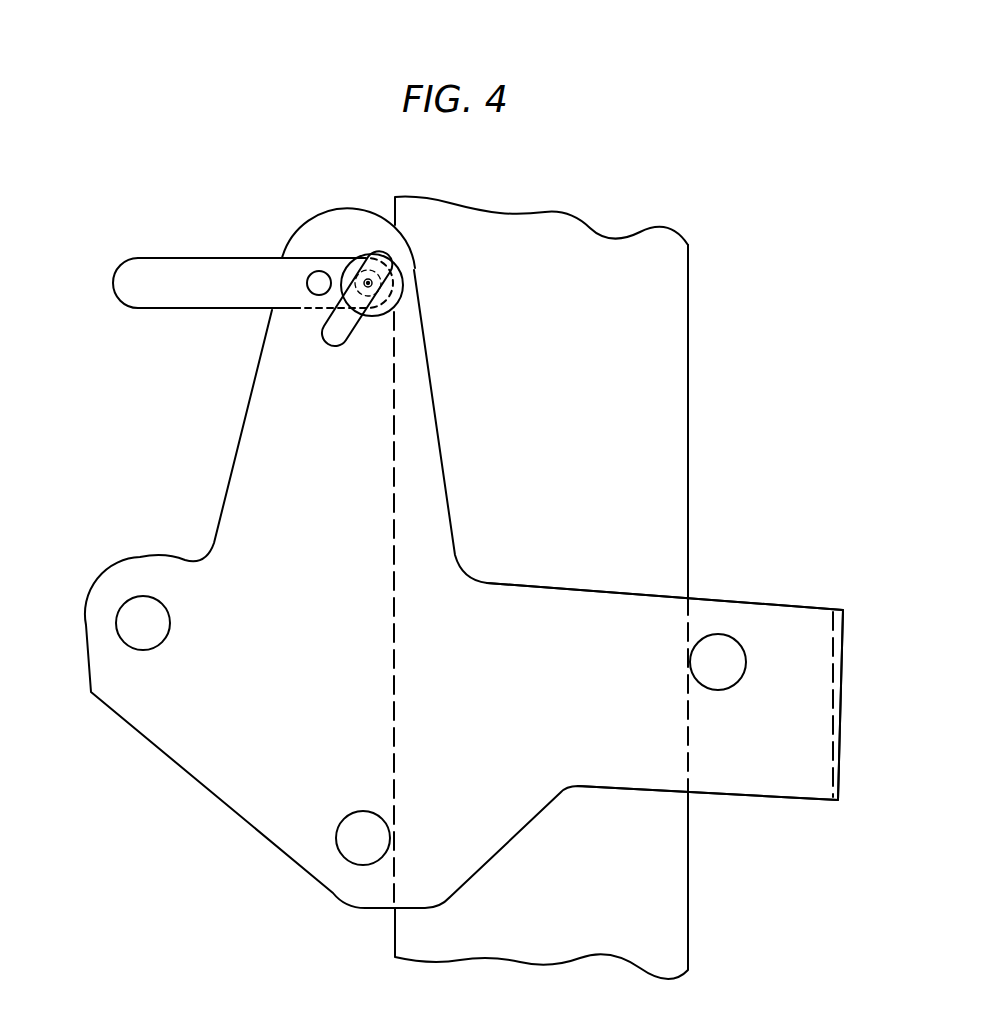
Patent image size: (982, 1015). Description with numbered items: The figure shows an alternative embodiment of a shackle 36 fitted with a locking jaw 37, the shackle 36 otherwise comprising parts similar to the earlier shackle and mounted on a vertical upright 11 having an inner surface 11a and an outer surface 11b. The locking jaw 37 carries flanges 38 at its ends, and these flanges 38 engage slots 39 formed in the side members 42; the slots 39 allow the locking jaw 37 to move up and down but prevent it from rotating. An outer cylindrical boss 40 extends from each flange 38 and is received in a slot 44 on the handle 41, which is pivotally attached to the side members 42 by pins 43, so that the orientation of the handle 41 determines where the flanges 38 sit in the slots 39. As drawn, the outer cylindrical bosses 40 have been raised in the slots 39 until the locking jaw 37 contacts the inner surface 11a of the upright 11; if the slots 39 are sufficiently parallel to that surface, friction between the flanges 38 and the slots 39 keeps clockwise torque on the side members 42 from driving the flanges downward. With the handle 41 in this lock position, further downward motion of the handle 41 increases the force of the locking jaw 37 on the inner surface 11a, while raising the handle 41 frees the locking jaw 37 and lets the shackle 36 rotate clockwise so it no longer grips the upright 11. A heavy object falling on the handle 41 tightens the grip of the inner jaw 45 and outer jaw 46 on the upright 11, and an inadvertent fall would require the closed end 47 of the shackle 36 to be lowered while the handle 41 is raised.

The upright 11 is at (660, 455).
The inner surface 11a is at (394, 645).
The outer surface 11b is at (688, 362).
The shackle 36 is at (133, 366).
The locking jaw 37 is at (368, 258).
The flanges 38 is at (266, 313).
The slots 39 is at (330, 347).
The outer cylindrical boss 40 is at (372, 283).
The handle 41 is at (166, 258).
The side members 42 is at (627, 591).
The pins 43 is at (313, 280).
The slots 44 is at (398, 300).
The inner jaw 45 is at (347, 835).
The outer jaw 46 is at (722, 678).
The closed end 47 is at (846, 633).